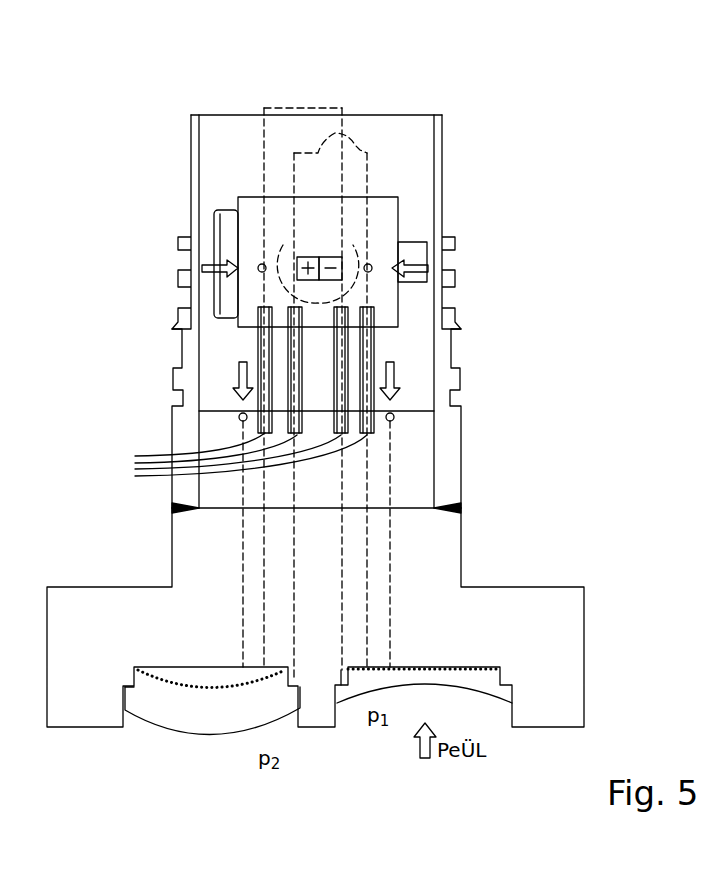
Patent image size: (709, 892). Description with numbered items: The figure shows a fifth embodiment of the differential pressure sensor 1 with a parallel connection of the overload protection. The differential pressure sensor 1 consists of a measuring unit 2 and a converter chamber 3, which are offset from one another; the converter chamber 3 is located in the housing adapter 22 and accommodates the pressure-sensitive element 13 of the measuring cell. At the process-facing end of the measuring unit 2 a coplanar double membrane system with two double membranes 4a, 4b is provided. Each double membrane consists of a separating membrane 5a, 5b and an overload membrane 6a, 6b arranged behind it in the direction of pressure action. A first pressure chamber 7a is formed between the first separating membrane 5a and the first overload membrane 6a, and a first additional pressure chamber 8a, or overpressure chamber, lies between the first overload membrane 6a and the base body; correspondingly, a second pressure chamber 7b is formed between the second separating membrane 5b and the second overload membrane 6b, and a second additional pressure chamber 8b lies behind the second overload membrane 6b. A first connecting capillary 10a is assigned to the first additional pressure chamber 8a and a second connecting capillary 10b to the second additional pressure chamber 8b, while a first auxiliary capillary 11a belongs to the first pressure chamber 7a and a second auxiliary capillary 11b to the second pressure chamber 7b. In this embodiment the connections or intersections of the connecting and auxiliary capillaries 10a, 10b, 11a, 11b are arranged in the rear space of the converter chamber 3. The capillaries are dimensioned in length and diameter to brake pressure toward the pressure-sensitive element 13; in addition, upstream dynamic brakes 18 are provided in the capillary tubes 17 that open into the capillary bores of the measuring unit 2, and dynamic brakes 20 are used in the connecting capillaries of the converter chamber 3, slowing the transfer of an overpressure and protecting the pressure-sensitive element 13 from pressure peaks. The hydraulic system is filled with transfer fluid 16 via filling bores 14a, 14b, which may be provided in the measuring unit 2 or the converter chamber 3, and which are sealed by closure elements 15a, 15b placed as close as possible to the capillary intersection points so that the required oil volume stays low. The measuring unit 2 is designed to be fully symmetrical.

The differential pressure sensor 1 is at (472, 115).
The measuring unit 2 is at (542, 582).
The converter chamber 3 is at (410, 190).
The first double membrane 4a is at (236, 742).
The second double membrane 4b is at (356, 755).
The first separating membrane 5a is at (190, 735).
The second separating membrane 5b is at (413, 685).
The first overload membrane 6a is at (160, 677).
The second overload membrane 6b is at (448, 667).
The first pressure chamber 7a is at (153, 698).
The second pressure chamber 7b is at (487, 685).
The first additional pressure chamber 8a is at (205, 683).
The second additional pressure chamber 8b is at (478, 667).
The first connecting capillary 10a is at (294, 571).
The second connecting capillary 10b is at (342, 571).
The first auxiliary capillary 11a is at (264, 613).
The second auxiliary capillary 11b is at (367, 613).
The pressure-sensitive element 13 is at (325, 290).
The first filling bore 14a is at (263, 532).
The second filling bore 14b is at (368, 533).
The first closure element 15a is at (260, 266).
The second closure element 15b is at (371, 264).
The transfer fluid 16 is at (366, 150).
The capillary tubes 17 is at (242, 391).
The upstream dynamic brakes 18 is at (290, 267).
The dynamic brakes 20 is at (462, 510).
The housing adapter 22 is at (225, 138).